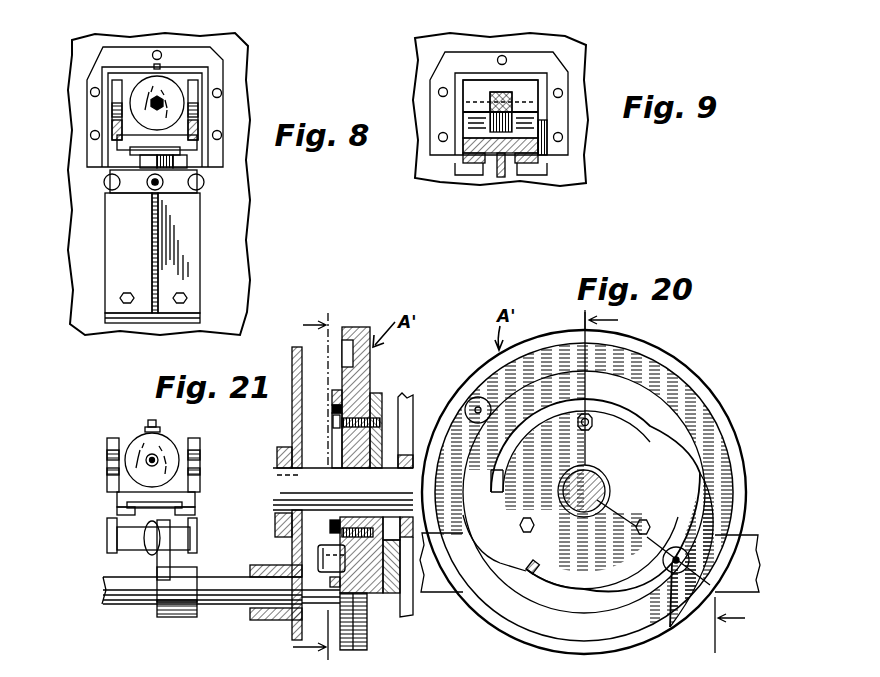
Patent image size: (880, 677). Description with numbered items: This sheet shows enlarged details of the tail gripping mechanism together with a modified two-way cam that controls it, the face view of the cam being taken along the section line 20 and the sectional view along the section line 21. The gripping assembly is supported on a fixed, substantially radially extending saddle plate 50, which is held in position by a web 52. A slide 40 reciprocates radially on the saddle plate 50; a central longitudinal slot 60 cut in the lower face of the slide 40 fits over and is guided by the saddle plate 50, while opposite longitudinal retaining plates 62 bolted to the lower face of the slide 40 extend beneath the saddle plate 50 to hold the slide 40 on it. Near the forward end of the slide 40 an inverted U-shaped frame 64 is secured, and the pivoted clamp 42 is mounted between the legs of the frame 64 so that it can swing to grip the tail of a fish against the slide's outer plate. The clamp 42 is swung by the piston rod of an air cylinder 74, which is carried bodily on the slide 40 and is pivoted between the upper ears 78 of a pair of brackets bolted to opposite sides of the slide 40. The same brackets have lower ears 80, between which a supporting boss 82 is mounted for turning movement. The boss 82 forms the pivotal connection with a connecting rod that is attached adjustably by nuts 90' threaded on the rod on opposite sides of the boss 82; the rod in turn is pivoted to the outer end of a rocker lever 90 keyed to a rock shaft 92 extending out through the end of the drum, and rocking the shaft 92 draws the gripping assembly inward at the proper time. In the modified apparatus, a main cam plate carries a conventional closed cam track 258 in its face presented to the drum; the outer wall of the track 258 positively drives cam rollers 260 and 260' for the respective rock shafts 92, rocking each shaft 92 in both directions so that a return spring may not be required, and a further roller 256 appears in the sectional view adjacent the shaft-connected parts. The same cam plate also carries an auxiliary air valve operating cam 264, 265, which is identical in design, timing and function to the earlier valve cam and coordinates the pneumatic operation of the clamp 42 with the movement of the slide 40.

In FIG. 8, the upper ears 78 is at (113, 92).
In FIG. 8, the central longitudinal slot 60 is at (177, 143).
In FIG. 8, the slide 40 is at (122, 143).
In FIG. 9, the slide 40 is at (463, 146).
In FIG. 8, the longitudinal retaining plates 62 is at (130, 150).
In FIG. 8, the rock shaft 92 is at (110, 187).
In FIG. 21, the rock shaft 92 is at (132, 587).
In FIG. 8, the saddle plate 50 is at (151, 152).
In FIG. 8, the supporting boss 82 is at (147, 177).
In FIG. 21, the supporting boss 82 is at (125, 528).
In FIG. 8, the lower ears 80 is at (162, 190).
In FIG. 21, the lower ears 80 is at (193, 532).
In FIG. 8, the nuts 90' is at (193, 250).
In FIG. 9, the inverted U-shaped frame 64 is at (455, 105).
In FIG. 9, the pivoted clamp 42 is at (527, 93).
In FIG. 9, the web 52 is at (498, 174).
In FIG. 20, the cam track 258 is at (697, 407).
In FIG. 21, the cam track 258 is at (352, 360).
In FIG. 20, the auxiliary air valve operating cam 264 is at (647, 420).
In FIG. 21, the auxiliary air valve operating cam 264 is at (335, 378).
In FIG. 20, the auxiliary air valve operating cam 265 is at (503, 547).
In FIG. 20, the cam roller 260 is at (683, 599).
In FIG. 21, the cam roller 260 is at (336, 585).
In FIG. 20, the cam roller 260' is at (459, 390).
In FIG. 20, the section line 21 is at (668, 481).
In FIG. 21, the air cylinder 74 is at (143, 442).
In FIG. 21, the roller 256 is at (148, 540).
In FIG. 21, the rocker lever 90 is at (192, 568).
In FIG. 21, the section line 20 is at (304, 489).